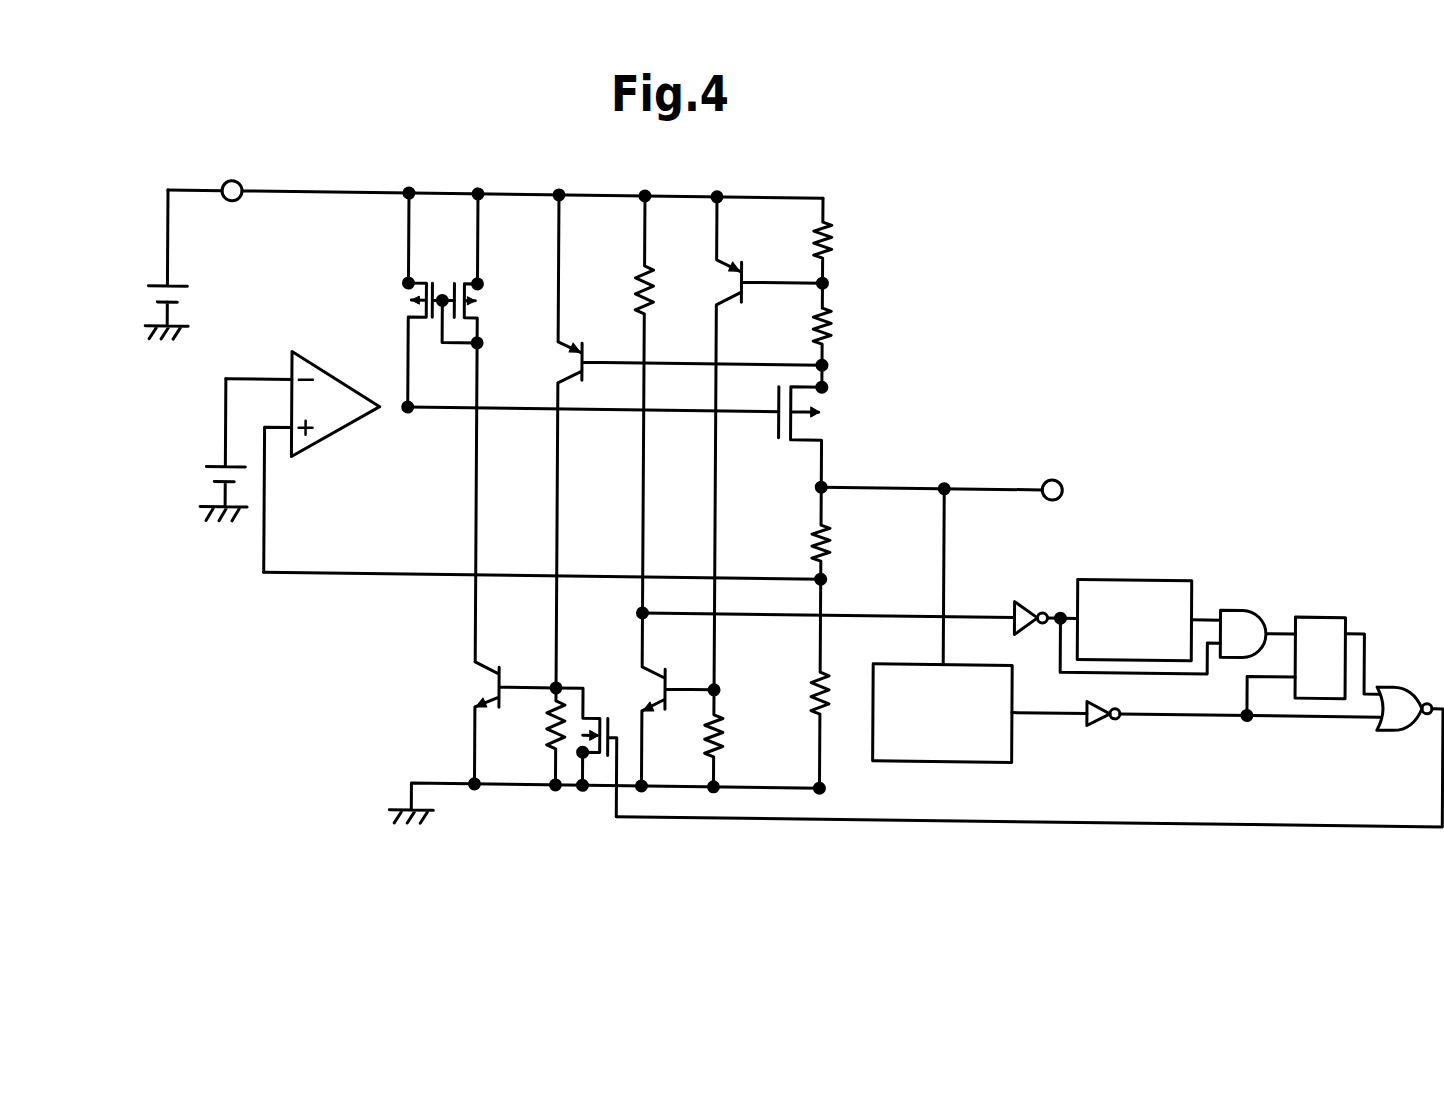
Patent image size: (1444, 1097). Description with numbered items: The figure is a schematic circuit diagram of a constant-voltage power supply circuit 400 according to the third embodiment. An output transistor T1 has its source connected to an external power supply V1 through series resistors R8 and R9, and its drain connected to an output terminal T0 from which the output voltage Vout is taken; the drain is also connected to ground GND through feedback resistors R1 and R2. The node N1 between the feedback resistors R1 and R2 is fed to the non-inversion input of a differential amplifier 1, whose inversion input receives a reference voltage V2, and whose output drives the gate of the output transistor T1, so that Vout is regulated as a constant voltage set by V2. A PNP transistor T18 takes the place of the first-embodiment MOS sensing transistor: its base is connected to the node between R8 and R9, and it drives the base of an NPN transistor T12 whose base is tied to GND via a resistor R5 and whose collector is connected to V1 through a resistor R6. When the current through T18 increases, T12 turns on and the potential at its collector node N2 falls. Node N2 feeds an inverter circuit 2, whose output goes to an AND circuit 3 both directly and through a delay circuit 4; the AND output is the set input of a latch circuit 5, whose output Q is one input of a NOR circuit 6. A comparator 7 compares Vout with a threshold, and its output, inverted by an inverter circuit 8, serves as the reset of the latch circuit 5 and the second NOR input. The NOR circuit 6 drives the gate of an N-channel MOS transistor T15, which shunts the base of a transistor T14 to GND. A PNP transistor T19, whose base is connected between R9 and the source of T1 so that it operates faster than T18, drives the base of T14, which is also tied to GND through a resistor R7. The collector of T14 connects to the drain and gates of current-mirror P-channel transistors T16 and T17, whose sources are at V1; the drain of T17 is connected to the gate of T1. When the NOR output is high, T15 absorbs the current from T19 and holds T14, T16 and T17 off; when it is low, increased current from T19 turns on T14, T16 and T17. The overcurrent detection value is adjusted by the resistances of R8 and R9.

The constant-voltage power supply circuit 400 is at (1064, 229).
The differential amplifier 1 is at (331, 373).
The inverter circuit 2 is at (1037, 592).
The AND circuit 3 is at (1240, 593).
The delay circuit 4 is at (1139, 569).
The latch circuit 5 is at (1320, 603).
The NOR circuit 6 is at (1398, 671).
The comparator 7 is at (1016, 741).
The inverter circuit 8 is at (1101, 709).
The output transistor T1 is at (818, 430).
The NPN transistor T12 is at (646, 664).
The transistor T14 is at (481, 660).
The N-channel MOS transistor T15 is at (589, 710).
The P-channel MOS transistor T16 is at (478, 279).
The P-channel MOS transistor T17 is at (409, 279).
The PNP transistor T18 is at (729, 258).
The PNP transistor T19 is at (558, 375).
The feedback resistor R1 is at (830, 523).
The feedback resistor R2 is at (826, 662).
The resistor R5 is at (721, 712).
The resistor R6 is at (651, 262).
The resistor R7 is at (556, 740).
The resistor R8 is at (833, 225).
The resistor R9 is at (833, 312).
The node N1 is at (566, 576).
The node N2 is at (805, 614).
The external power supply V1 is at (149, 287).
The reference voltage V2 is at (208, 466).
The output voltage Vout is at (1060, 488).
The output terminal T0 is at (1095, 523).
The ground GND is at (574, 806).